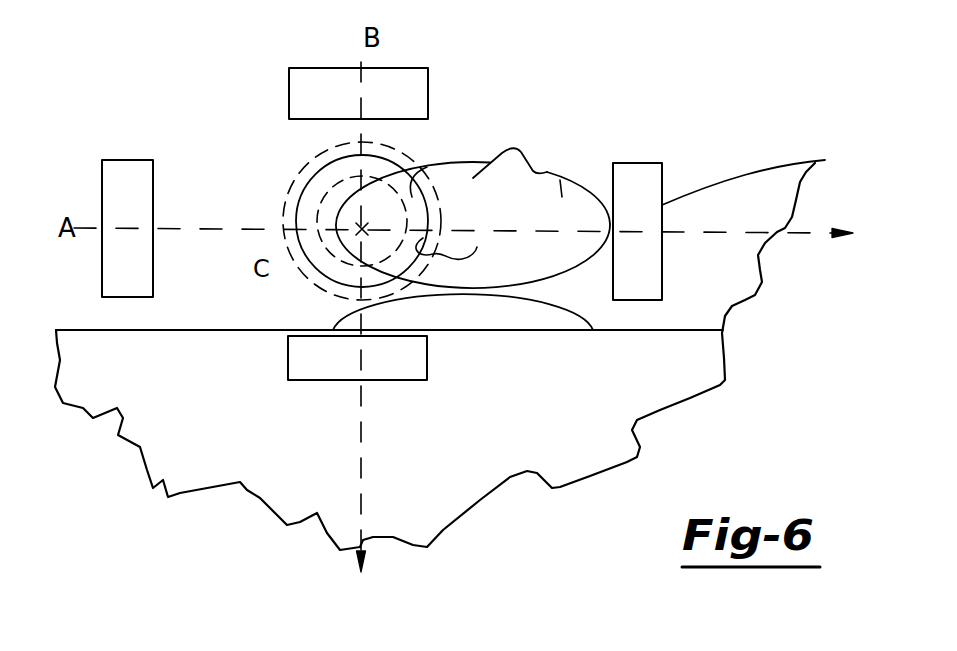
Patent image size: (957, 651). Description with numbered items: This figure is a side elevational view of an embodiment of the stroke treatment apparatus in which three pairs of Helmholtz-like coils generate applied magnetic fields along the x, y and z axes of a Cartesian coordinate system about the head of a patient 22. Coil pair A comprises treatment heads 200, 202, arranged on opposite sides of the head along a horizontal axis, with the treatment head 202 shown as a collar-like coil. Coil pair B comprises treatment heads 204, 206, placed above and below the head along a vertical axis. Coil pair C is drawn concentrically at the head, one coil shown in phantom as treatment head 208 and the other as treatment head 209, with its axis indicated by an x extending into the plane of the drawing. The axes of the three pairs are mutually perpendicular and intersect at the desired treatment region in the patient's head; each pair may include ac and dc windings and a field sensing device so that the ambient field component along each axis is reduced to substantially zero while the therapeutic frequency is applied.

The patient 22 is at (793, 170).
The treatment head 200 is at (103, 203).
The treatment head 202 is at (638, 178).
The treatment head 204 is at (428, 102).
The treatment head 206 is at (383, 380).
The treatment head 208 is at (287, 198).
The treatment head 209 is at (307, 260).